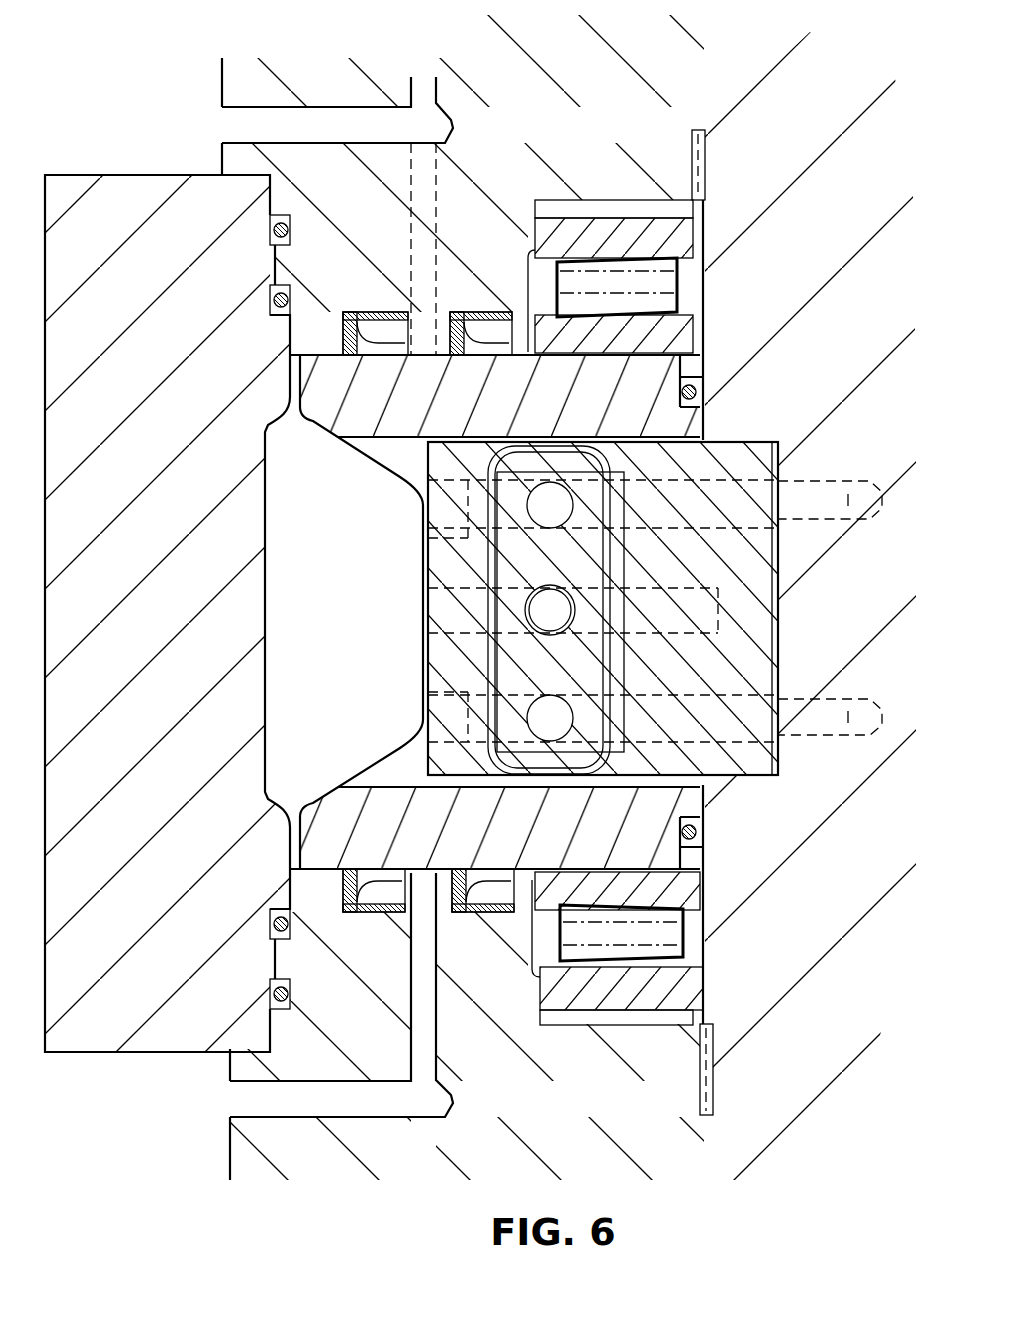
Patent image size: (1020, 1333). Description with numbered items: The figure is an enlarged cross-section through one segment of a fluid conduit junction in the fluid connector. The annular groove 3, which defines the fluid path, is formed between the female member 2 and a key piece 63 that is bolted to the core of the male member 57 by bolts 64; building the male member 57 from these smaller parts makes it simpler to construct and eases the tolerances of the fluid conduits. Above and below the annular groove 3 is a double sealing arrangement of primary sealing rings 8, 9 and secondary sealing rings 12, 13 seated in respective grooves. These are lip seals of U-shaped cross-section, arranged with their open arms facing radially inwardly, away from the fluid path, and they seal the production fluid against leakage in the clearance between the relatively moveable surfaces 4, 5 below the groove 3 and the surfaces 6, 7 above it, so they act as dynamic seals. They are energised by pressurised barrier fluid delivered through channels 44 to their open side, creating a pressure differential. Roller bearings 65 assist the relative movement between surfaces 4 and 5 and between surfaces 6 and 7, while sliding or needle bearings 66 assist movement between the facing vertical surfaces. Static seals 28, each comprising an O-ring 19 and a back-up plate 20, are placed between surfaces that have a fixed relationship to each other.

The female member 2 is at (463, 597).
The annular groove 3 is at (306, 615).
The relatively moveable surface 4 is at (296, 924).
The relatively moveable surface 5 is at (318, 866).
The relatively moveable surface 6 is at (314, 355).
The relatively moveable surface 7 is at (333, 357).
The primary sealing ring 8 is at (358, 913).
The primary sealing ring 9 is at (361, 312).
The secondary sealing ring 12 is at (462, 913).
The secondary sealing ring 13 is at (462, 312).
The O-ring 19 is at (276, 233).
The back-up plate 20 is at (268, 216).
The static seal 28 is at (702, 400).
The channel 44 is at (326, 120).
The male member 57 is at (810, 606).
The key piece 63 is at (765, 444).
The bolt 64 is at (835, 481).
The roller bearing 65 is at (703, 338).
The sliding or needle bearing 66 is at (708, 165).